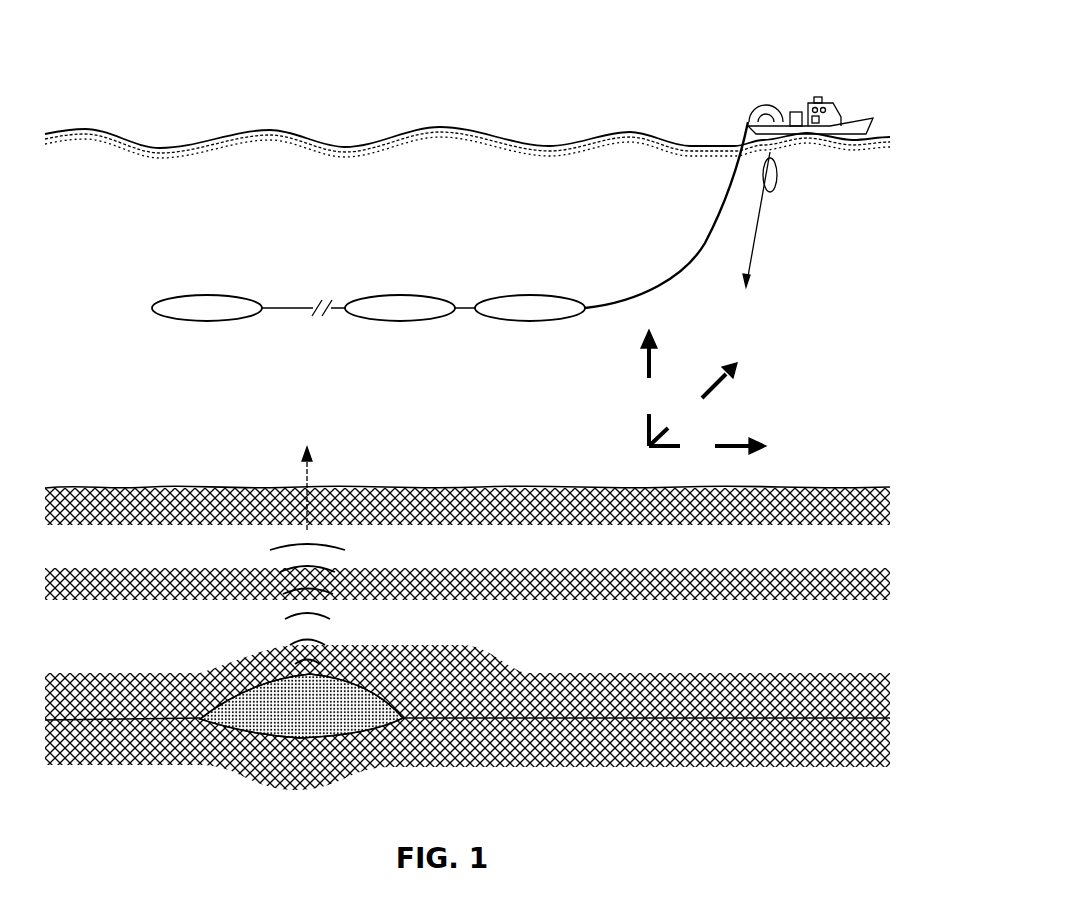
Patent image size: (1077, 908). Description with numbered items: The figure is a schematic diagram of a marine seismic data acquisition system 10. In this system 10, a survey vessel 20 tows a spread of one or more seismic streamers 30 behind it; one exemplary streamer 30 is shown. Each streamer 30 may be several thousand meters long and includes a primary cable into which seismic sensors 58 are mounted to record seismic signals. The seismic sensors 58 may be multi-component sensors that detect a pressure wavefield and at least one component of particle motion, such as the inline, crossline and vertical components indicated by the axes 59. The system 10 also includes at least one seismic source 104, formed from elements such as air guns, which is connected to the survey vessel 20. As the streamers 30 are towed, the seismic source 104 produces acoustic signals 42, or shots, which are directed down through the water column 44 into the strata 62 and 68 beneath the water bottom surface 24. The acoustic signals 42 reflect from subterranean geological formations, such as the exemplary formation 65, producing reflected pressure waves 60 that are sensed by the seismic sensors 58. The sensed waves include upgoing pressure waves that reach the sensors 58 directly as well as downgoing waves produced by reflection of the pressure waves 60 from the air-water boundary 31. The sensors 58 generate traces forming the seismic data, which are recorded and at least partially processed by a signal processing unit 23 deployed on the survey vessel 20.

The marine seismic data acquisition system 10 is at (252, 103).
The survey vessel 20 is at (866, 117).
The signal processing unit 23 is at (793, 112).
The water bottom surface 24 is at (768, 486).
The seismic streamer 30 is at (715, 220).
The air-water boundary 31 is at (413, 130).
The acoustic signal 42 is at (757, 246).
The water column 44 is at (778, 335).
The seismic sensor 58 is at (215, 295).
The axes 59 is at (643, 451).
The pressure waves 60 is at (270, 622).
The strata 62 is at (451, 690).
The formation 65 is at (293, 724).
The strata 68 is at (451, 764).
The seismic source 104 is at (778, 173).